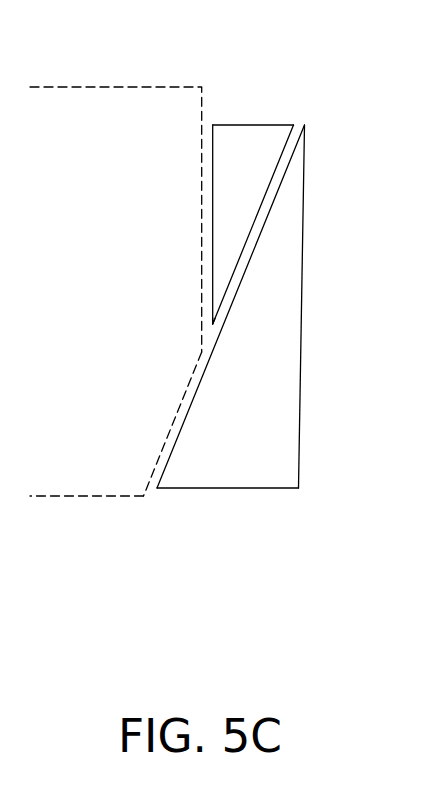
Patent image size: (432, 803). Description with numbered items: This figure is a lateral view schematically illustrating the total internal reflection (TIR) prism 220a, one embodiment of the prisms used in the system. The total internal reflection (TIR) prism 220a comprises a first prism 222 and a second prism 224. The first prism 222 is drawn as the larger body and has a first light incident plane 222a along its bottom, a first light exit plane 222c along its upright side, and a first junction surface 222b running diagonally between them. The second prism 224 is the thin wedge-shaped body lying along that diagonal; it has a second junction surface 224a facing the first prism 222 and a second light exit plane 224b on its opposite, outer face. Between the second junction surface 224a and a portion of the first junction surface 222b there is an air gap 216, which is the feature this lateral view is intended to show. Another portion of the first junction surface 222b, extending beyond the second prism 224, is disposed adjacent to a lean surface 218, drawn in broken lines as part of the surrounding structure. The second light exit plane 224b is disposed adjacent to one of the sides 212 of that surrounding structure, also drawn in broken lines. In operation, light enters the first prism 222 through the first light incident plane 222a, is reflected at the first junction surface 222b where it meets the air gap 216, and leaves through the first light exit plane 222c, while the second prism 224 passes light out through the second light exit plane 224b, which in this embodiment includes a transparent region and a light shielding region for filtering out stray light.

The side 212 is at (201, 159).
The lean surface 218 is at (162, 452).
The air gap 216 is at (214, 323).
The total internal reflection (TIR) prism 220a is at (334, 619).
The first prism 222 is at (291, 450).
The first light incident plane 222a is at (226, 488).
The first junction surface 222b is at (237, 292).
The first light exit plane 222c is at (302, 268).
The second prism 224 is at (222, 245).
The second junction surface 224a is at (268, 185).
The second light exit plane 224b is at (212, 200).